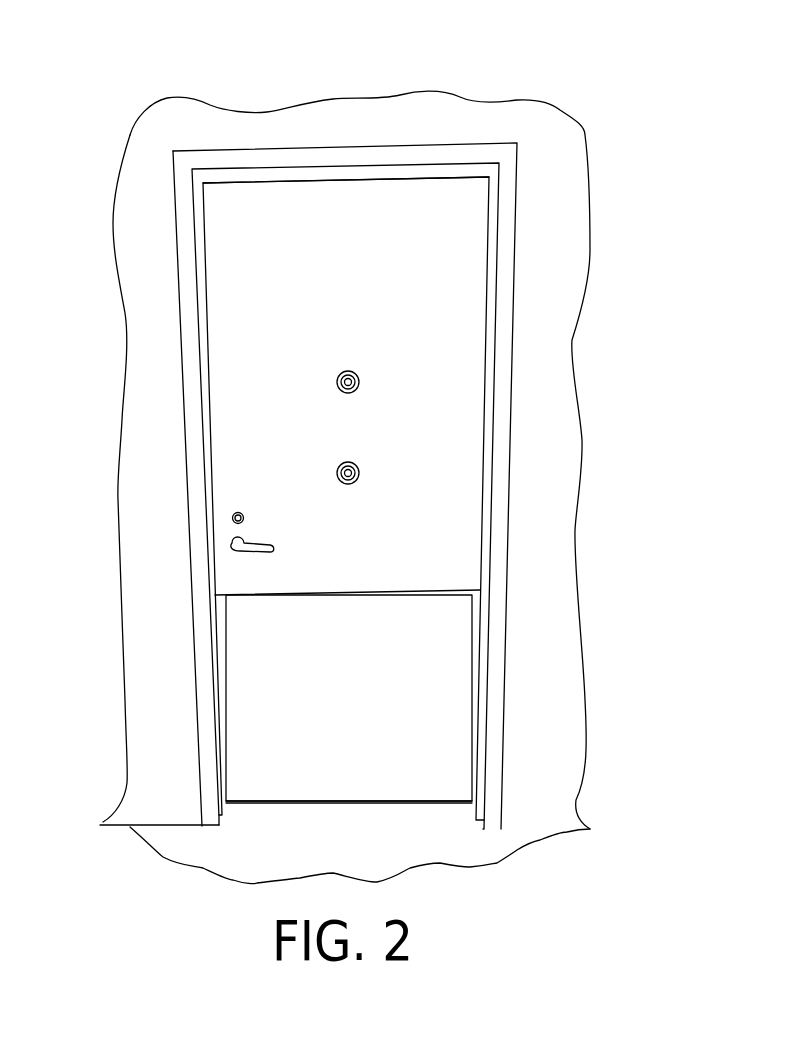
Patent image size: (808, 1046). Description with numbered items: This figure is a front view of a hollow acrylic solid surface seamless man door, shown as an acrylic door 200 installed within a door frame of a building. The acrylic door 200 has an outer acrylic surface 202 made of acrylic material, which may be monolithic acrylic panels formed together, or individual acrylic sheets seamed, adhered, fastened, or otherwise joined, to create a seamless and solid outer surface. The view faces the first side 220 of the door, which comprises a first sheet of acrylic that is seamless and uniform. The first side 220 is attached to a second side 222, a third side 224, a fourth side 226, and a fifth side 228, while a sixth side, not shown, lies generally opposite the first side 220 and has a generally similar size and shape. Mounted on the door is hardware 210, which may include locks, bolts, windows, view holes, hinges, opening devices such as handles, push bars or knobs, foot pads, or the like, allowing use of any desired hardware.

The acrylic door 200 is at (603, 118).
The outer acrylic surface 202 is at (470, 521).
The hardware 210 is at (362, 382).
The first side 220 is at (235, 231).
The second side 222 is at (488, 338).
The third side 224 is at (340, 178).
The fourth side 226 is at (200, 312).
The fifth side 228 is at (320, 807).